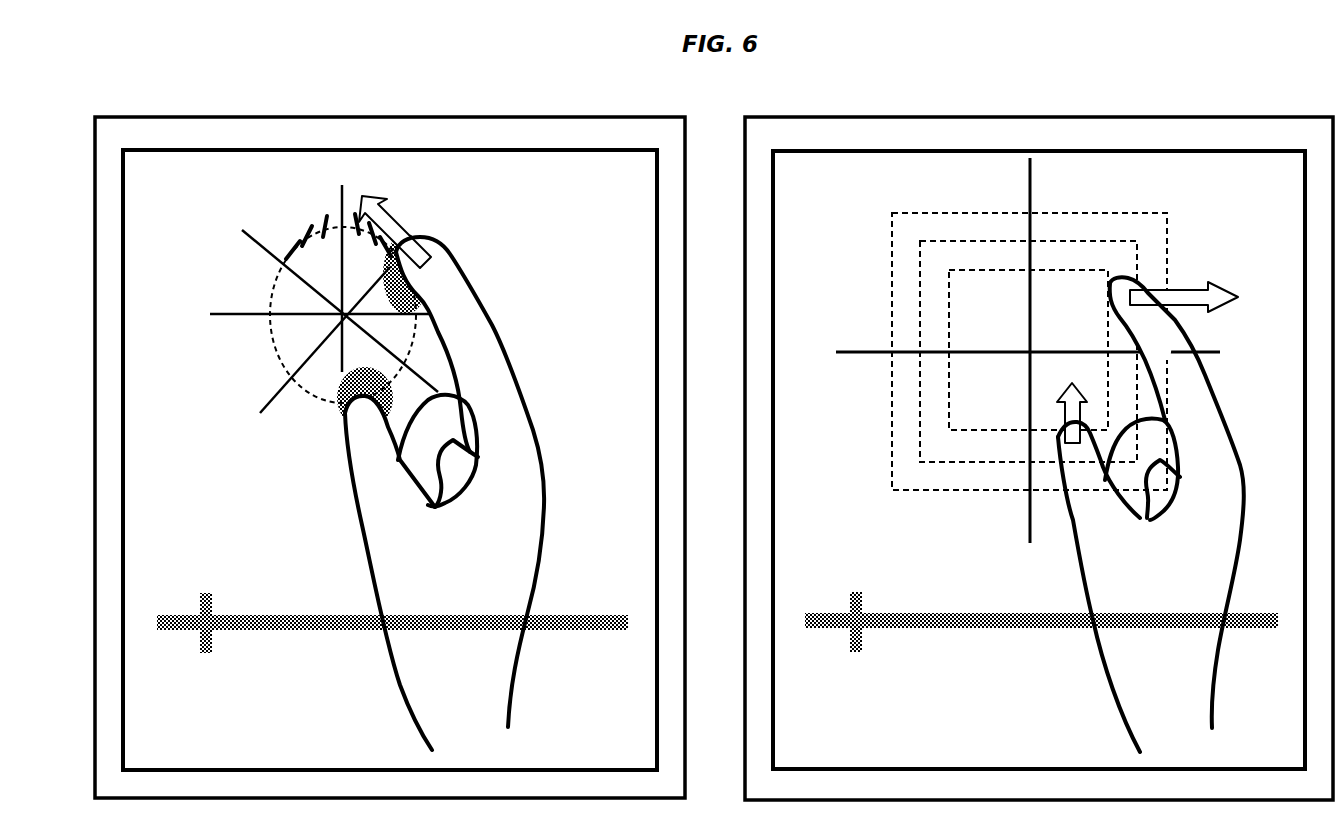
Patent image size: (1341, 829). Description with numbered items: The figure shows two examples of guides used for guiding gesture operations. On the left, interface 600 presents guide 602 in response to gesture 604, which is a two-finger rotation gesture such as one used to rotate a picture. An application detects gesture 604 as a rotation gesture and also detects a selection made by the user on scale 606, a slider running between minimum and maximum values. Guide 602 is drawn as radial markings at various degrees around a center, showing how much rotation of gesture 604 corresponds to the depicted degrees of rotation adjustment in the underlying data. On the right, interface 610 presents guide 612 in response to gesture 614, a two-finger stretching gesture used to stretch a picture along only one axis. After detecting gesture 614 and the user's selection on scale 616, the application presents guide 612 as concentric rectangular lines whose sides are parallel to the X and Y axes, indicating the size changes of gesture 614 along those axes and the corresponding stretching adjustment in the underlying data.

The interface 600 is at (443, 149).
The guide 602 is at (291, 354).
The gesture 604 is at (400, 231).
The scale 606 is at (208, 594).
The interface 610 is at (1093, 150).
The guide 612 is at (903, 319).
The gesture 614 is at (1192, 288).
The scale 616 is at (858, 594).